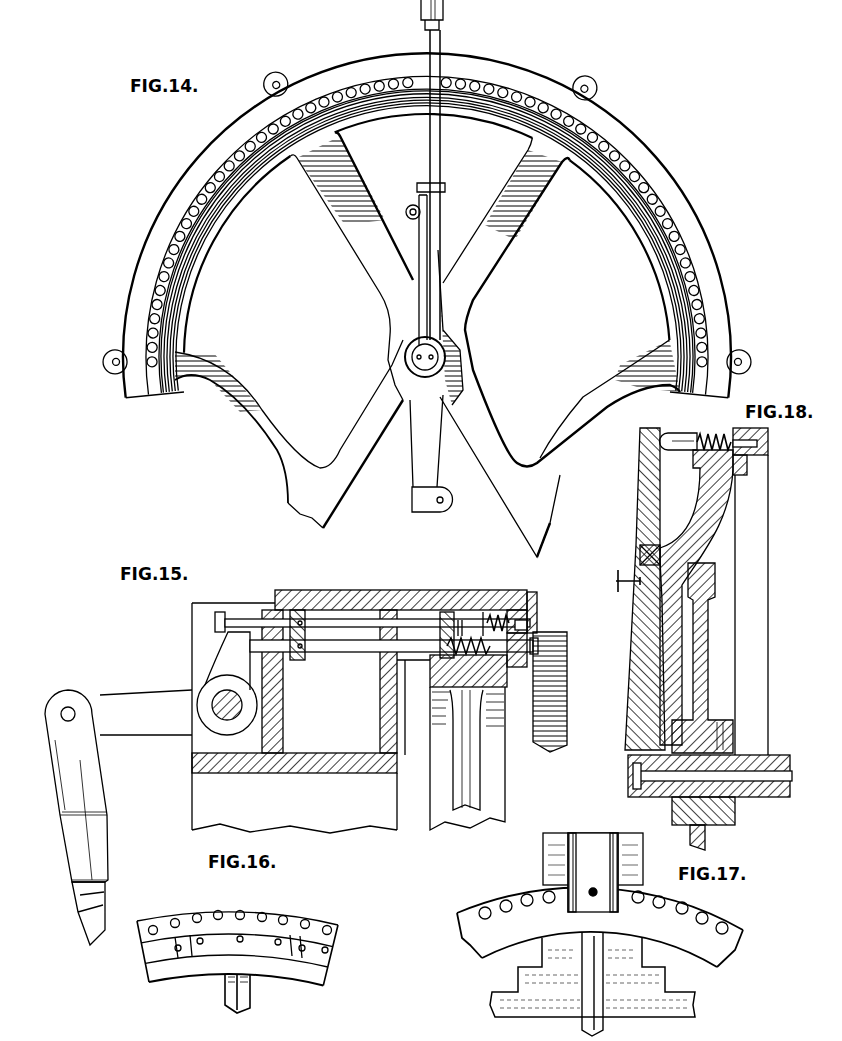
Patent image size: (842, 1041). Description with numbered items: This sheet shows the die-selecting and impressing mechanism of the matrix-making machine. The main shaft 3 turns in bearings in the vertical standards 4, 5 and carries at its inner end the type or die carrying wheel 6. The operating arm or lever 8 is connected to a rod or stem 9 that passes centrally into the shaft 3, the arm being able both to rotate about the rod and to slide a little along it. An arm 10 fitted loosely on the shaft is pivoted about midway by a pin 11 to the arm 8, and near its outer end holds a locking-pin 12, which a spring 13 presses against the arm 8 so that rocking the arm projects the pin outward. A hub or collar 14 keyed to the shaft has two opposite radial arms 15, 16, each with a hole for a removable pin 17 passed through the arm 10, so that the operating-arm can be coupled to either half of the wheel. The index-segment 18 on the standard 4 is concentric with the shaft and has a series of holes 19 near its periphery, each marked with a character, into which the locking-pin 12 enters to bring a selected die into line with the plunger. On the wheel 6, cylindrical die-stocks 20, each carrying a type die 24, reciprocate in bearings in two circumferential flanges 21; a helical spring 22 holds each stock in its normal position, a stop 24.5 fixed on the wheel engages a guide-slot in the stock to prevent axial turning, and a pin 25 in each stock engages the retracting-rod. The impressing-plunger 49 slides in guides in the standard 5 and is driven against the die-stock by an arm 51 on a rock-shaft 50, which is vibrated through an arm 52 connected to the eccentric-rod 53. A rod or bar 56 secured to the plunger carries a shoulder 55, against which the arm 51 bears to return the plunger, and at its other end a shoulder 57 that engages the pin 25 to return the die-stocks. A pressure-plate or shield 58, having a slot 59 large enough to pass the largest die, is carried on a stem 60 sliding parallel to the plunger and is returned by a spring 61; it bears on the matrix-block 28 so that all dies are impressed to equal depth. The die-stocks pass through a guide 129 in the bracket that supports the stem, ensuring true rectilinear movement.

In FIG. 18, the main shaft 3 is at (709, 787).
In FIG. 14, the vertical standard 4 is at (427, 335).
In FIG. 15, the vertical standard 5 is at (359, 711).
In FIG. 15, the type or die carrying wheel 6 is at (473, 758).
In FIG. 16, the type or die carrying wheel 6 is at (237, 962).
In FIG. 17, the type or die carrying wheel 6 is at (600, 962).
In FIG. 14, the operating arm or lever 8 is at (441, 158).
In FIG. 18, the operating arm or lever 8 is at (638, 589).
In FIG. 18, the rod or stem 9 is at (780, 770).
In FIG. 14, the arm 10 is at (428, 258).
In FIG. 18, the arm 10 is at (703, 548).
In FIG. 18, the pin 11 is at (640, 555).
In FIG. 18, the locking-pin 12 is at (679, 430).
In FIG. 18, the spring 13 is at (712, 432).
In FIG. 14, the hub or collar 14 is at (425, 377).
In FIG. 18, the hub or collar 14 is at (735, 820).
In FIG. 14, the arm 15 is at (418, 312).
In FIG. 18, the arm 15 is at (702, 658).
In FIG. 14, the arm 16 is at (431, 453).
In FIG. 18, the arm 16 is at (710, 840).
In FIG. 14, the removable pin 17 is at (407, 206).
In FIG. 18, the removable pin 17 is at (618, 589).
In FIG. 14, the index-segment 18 is at (427, 225).
In FIG. 18, the index-segment 18 is at (772, 460).
In FIG. 14, the holes 19 is at (212, 226).
In FIG. 18, the holes 19 is at (771, 439).
In FIG. 15, the die-stocks 20 is at (425, 660).
In FIG. 16, the circumferential flanges 21 is at (186, 920).
In FIG. 17, the circumferential flanges 21 is at (508, 903).
In FIG. 15, the helical spring 22 is at (503, 698).
In FIG. 15, the type or character die 24 is at (440, 630).
In FIG. 16, the stop 24.5 is at (240, 918).
In FIG. 15, the pin 25 is at (427, 600).
In FIG. 15, the matrix-block 28 is at (563, 692).
In FIG. 15, the impressing-plunger 49 is at (394, 659).
In FIG. 15, the rock-shaft 50 is at (227, 707).
In FIG. 15, the arm 51 is at (227, 661).
In FIG. 15, the arm 52 is at (118, 786).
In FIG. 15, the rod 53 is at (75, 913).
In FIG. 15, the shoulder or projection 55 is at (214, 624).
In FIG. 15, the rod or bar 56 is at (377, 616).
In FIG. 15, the shoulder or projection 57 is at (478, 633).
In FIG. 15, the pressure-plate or shield 58 is at (544, 612).
In FIG. 17, the pressure-plate or shield 58 is at (593, 872).
In FIG. 17, the slot 59 is at (603, 882).
In FIG. 15, the stem 60 is at (519, 620).
In FIG. 15, the spring 61 is at (490, 610).
In FIG. 15, the guide 129 is at (503, 680).